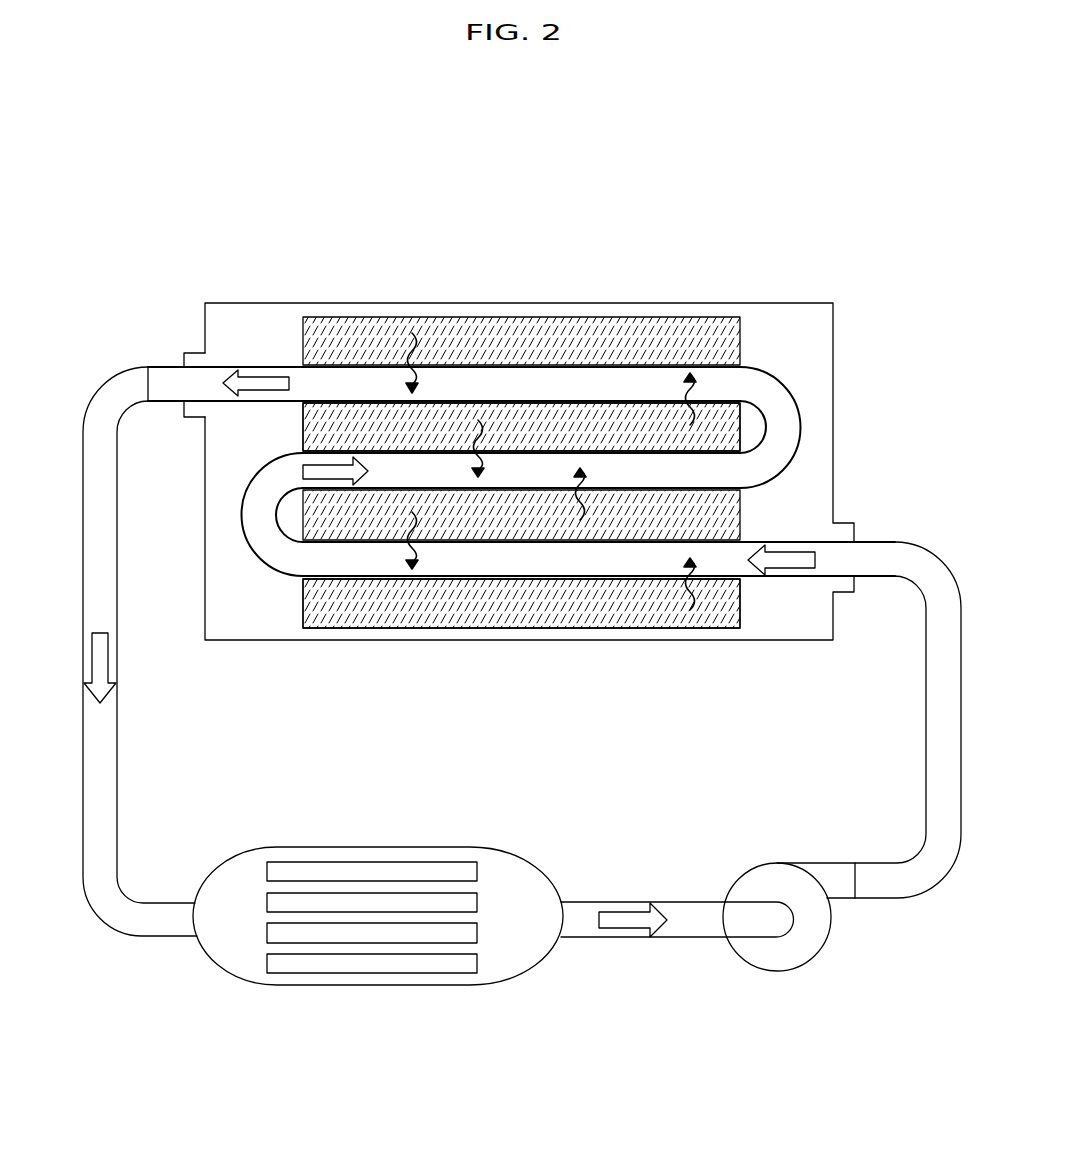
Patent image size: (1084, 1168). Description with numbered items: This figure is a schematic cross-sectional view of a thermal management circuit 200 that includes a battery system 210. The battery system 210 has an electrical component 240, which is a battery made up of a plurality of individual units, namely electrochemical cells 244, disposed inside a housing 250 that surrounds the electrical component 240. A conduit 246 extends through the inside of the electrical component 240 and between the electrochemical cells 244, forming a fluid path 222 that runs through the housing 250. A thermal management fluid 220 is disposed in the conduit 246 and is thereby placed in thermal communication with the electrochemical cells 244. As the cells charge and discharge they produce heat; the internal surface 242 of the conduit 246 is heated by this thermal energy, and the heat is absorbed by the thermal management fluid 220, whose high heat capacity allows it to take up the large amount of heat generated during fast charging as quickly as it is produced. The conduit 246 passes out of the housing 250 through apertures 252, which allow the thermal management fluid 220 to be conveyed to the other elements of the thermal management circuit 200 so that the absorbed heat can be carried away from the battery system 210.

The thermal management circuit 200 is at (795, 248).
The battery system 210 is at (428, 284).
The thermal management fluid 220 is at (322, 387).
The fluid path 222 is at (332, 473).
The electrical component 240 is at (514, 326).
The internal surface 242 is at (590, 368).
The electrochemical cell 244 is at (318, 600).
The conduit 246 is at (787, 388).
The housing 250 is at (243, 640).
The aperture 252 is at (178, 332).